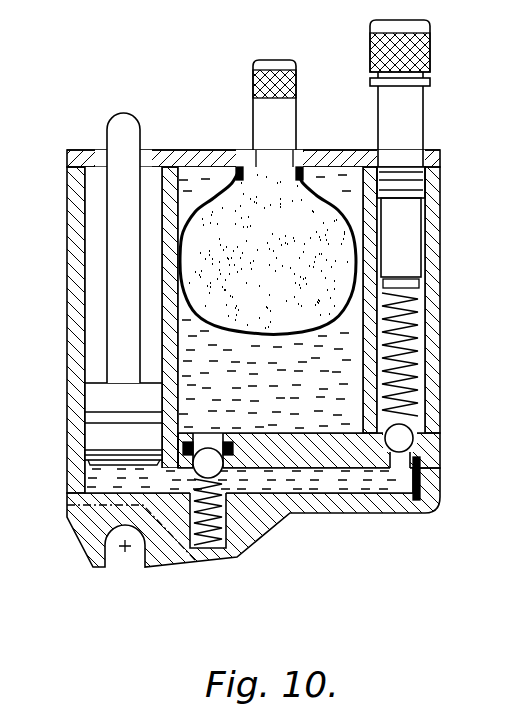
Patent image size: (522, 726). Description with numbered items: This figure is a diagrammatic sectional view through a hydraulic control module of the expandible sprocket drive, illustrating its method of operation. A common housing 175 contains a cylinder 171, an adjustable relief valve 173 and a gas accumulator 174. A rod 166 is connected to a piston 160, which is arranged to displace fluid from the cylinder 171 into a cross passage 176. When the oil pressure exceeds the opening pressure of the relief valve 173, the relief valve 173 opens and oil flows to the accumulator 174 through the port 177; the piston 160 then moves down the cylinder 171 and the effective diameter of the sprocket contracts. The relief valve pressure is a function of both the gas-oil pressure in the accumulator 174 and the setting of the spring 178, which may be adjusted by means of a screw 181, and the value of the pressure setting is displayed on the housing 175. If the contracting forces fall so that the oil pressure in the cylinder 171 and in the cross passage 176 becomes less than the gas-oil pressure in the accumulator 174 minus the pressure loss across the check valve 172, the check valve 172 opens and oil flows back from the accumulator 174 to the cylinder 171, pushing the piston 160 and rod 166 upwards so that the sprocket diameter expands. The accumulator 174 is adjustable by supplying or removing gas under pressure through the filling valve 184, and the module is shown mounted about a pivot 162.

The piston 160 is at (102, 435).
The pivot 162 is at (129, 569).
The rod 166 is at (118, 300).
The cylinder 171 is at (85, 480).
The check valve 172 is at (239, 561).
The adjustable relief valve 173 is at (453, 369).
The gas accumulator 174 is at (272, 218).
The common housing 175 is at (78, 203).
The cross passage 176 is at (313, 480).
The port 177 is at (370, 398).
The spring 178 is at (420, 306).
The screw 181 is at (413, 117).
The filling valve 184 is at (253, 78).